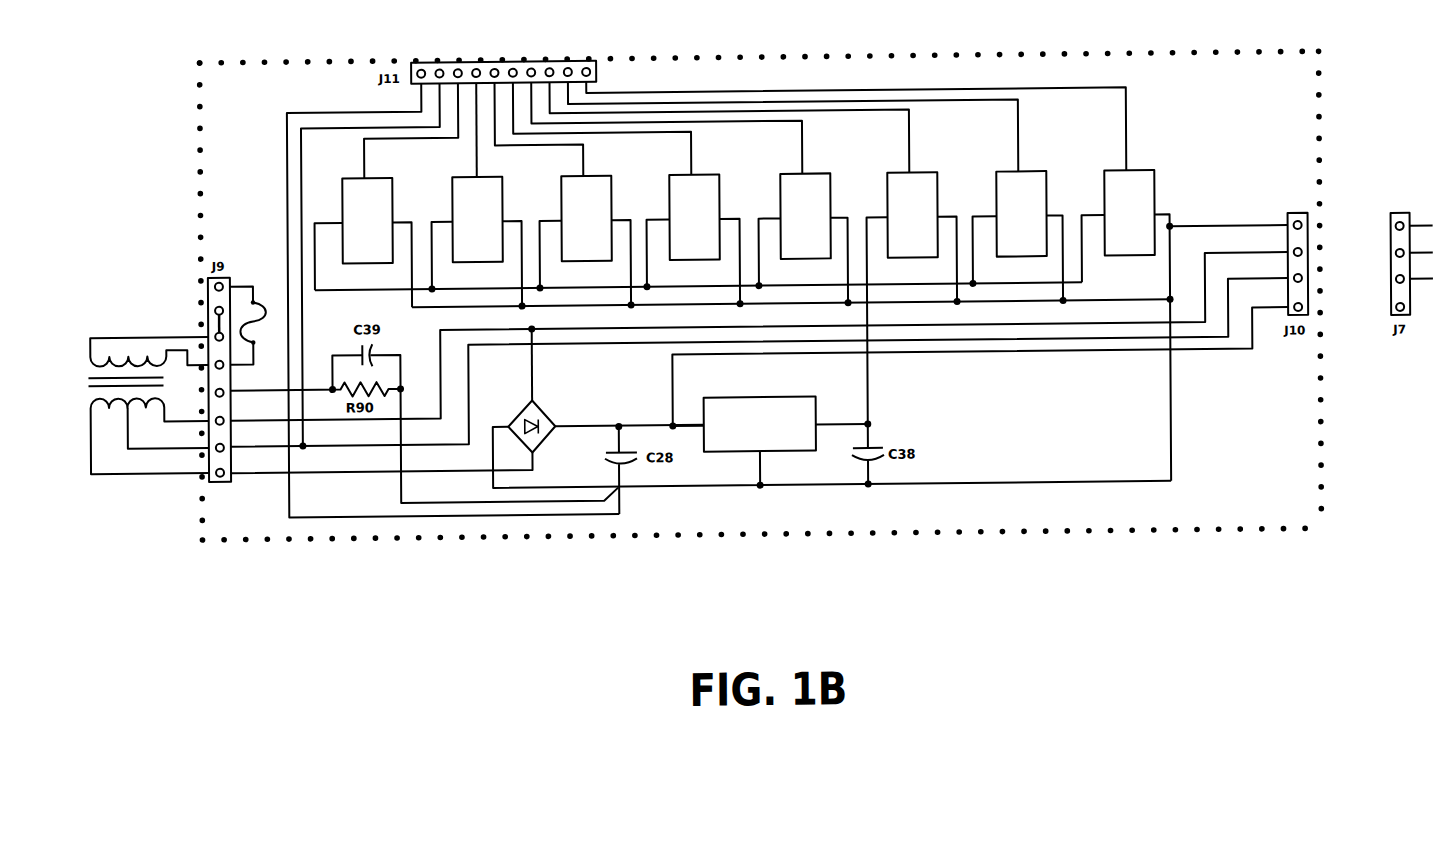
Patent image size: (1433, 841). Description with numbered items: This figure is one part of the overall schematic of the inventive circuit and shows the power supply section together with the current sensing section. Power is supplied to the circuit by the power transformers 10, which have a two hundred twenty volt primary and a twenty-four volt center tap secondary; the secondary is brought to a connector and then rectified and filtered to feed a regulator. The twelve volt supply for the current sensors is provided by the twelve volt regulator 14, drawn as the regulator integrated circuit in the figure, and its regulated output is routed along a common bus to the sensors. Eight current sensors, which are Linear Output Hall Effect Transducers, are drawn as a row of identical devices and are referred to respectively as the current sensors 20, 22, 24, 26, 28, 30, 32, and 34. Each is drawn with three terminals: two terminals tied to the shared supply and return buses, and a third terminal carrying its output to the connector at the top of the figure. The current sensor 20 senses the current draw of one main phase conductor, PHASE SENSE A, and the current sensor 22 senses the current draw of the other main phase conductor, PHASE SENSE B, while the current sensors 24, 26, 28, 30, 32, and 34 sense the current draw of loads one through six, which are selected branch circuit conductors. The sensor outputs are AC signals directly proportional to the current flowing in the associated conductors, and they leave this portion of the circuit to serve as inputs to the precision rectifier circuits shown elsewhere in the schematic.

The power transformers 10 is at (111, 408).
The 12 volt regulator 14 is at (777, 403).
The current sensor 20 is at (341, 188).
The current sensor 22 is at (453, 188).
The current sensor 24 is at (562, 186).
The current sensor 26 is at (670, 185).
The current sensor 28 is at (782, 186).
The current sensor 30 is at (888, 187).
The current sensor 32 is at (997, 188).
The current sensor 34 is at (1103, 188).